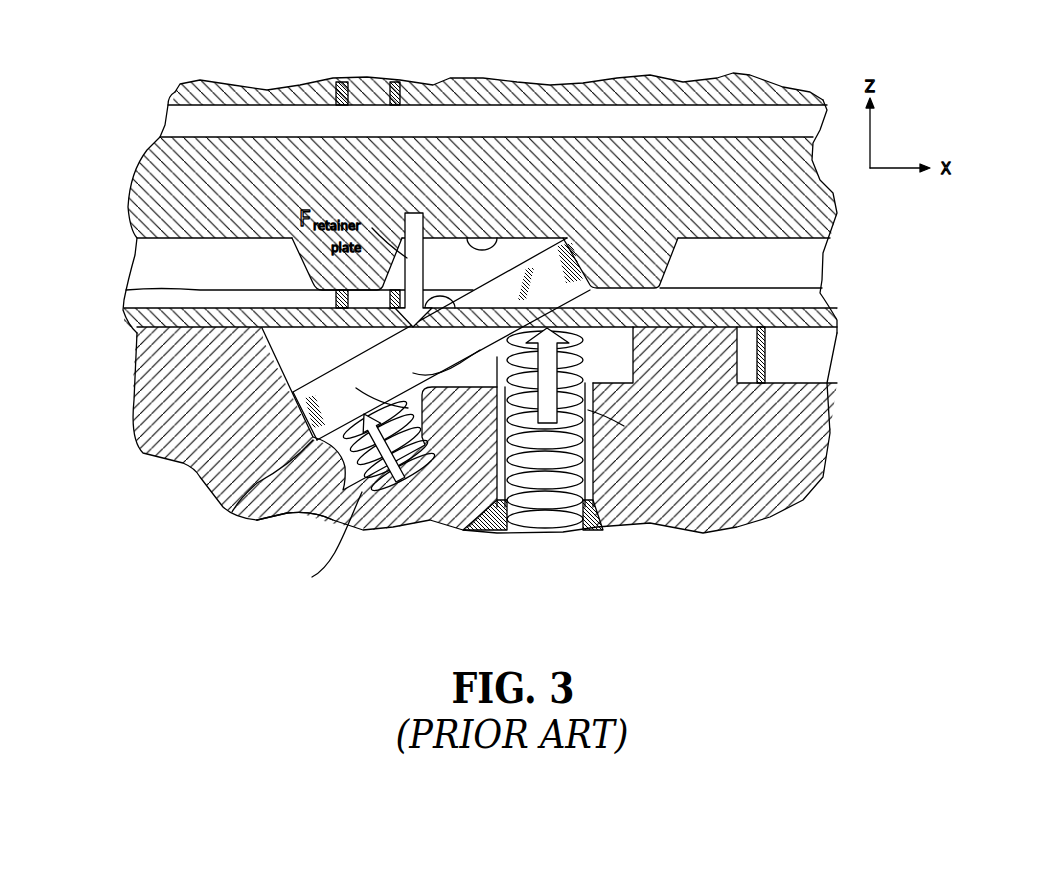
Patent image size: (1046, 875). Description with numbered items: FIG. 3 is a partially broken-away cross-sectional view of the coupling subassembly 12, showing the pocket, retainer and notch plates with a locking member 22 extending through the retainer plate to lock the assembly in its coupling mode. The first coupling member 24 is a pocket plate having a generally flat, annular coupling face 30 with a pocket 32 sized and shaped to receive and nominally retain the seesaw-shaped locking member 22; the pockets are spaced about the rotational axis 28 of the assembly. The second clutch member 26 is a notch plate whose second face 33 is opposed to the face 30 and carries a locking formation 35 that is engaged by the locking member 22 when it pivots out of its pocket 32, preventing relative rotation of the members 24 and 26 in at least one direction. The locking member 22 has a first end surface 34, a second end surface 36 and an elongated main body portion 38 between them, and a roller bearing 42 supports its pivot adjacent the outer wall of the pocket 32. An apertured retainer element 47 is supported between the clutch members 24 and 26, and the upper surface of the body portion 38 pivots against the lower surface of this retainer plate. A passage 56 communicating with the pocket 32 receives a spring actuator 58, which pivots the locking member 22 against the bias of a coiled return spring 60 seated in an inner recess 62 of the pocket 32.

The coupling subassembly 12 is at (108, 163).
The locking member 22 is at (223, 423).
The first coupling member 24 is at (767, 477).
The second clutch member 26 is at (740, 132).
The rotational axis 28 is at (578, 64).
The coupling face 30 is at (145, 336).
The pocket 32 is at (807, 357).
The second face 33 is at (462, 230).
The first end surface 34 is at (297, 418).
The locking formation 35 is at (300, 277).
The second end surface 36 is at (588, 258).
The main body portion 38 is at (421, 388).
The roller bearing 42 is at (485, 330).
The retainer element 47 is at (123, 317).
The passage 56 is at (583, 518).
The spring actuator 58 is at (482, 525).
The return spring 60 is at (405, 480).
The inner recess 62 is at (293, 511).